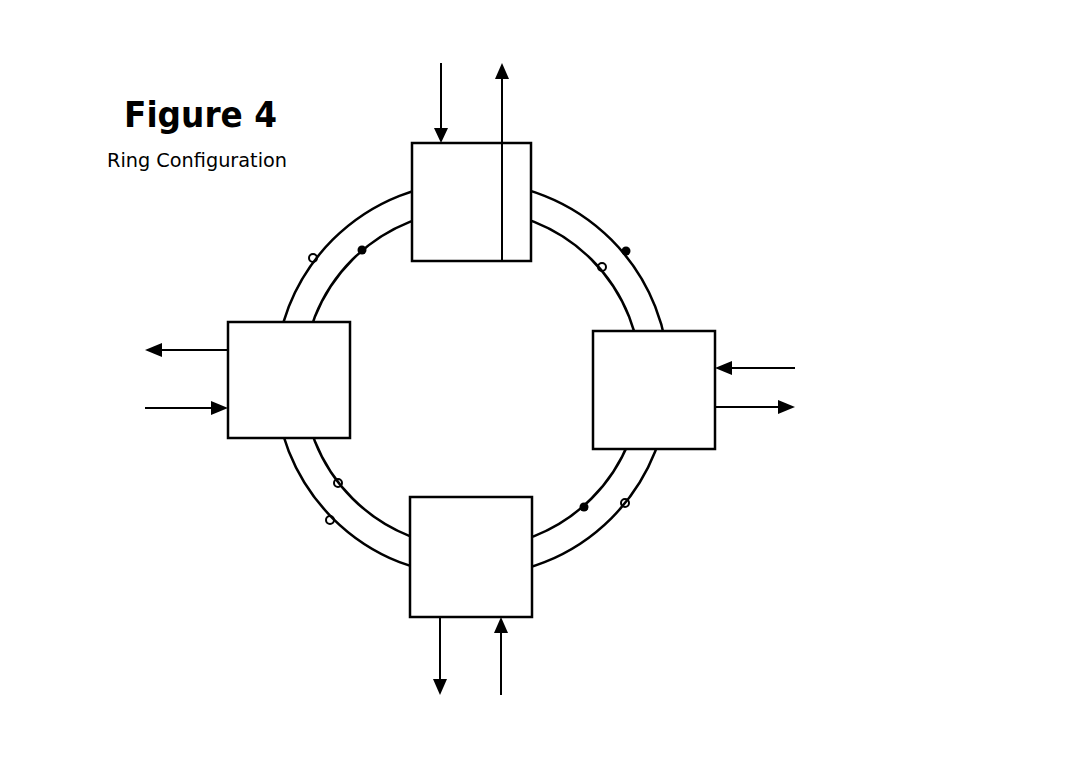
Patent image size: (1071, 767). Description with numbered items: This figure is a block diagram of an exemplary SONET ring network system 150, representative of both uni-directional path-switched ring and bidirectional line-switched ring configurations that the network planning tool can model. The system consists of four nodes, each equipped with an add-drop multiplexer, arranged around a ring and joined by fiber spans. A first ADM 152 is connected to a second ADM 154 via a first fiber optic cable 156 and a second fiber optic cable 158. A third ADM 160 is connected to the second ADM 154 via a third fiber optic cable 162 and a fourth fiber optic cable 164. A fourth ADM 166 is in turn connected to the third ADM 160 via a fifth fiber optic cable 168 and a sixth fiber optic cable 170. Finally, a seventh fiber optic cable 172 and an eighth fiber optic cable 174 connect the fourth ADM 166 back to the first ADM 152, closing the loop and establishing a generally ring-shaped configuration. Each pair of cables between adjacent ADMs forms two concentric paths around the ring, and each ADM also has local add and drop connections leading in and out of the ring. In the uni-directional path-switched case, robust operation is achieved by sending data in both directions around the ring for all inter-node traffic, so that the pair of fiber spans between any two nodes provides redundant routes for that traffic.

The SONET ring network system 150 is at (663, 117).
The first ADM 152 is at (255, 432).
The second ADM 154 is at (523, 165).
The first fiber optic cable 156 is at (309, 259).
The second fiber optic cable 158 is at (362, 250).
The third ADM 160 is at (682, 337).
The third fiber optic cable 162 is at (626, 251).
The fourth fiber optic cable 164 is at (600, 270).
The fourth ADM 166 is at (523, 593).
The fifth fiber optic cable 168 is at (627, 507).
The sixth fiber optic cable 170 is at (584, 507).
The seventh fiber optic cable 172 is at (327, 523).
The eighth fiber optic cable 174 is at (341, 480).